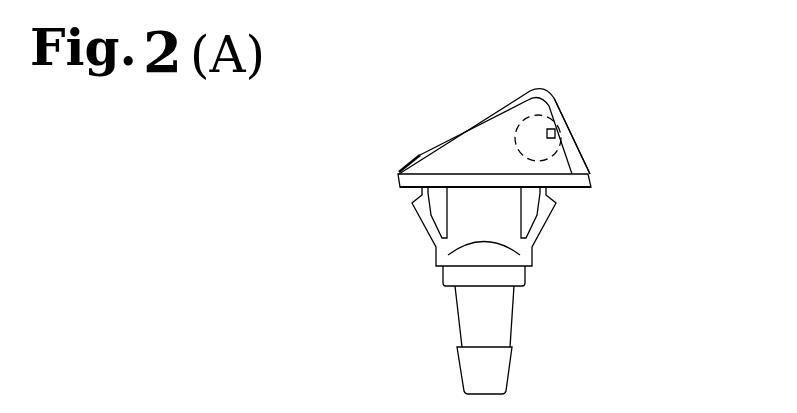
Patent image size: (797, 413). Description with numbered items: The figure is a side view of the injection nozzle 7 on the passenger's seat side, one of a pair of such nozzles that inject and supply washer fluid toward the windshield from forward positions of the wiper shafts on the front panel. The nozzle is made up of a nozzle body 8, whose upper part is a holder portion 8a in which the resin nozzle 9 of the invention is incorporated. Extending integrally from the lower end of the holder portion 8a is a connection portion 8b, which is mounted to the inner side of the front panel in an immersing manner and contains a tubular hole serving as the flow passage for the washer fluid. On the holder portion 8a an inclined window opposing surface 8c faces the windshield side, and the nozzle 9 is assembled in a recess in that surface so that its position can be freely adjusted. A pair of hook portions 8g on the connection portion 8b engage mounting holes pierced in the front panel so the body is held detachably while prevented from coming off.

The injection nozzle 7 is at (608, 92).
The nozzle body 8 is at (463, 110).
The holder portion 8a is at (496, 135).
The connection portion 8b is at (487, 315).
The window opposing surface 8c is at (577, 163).
The hook portion 8g is at (542, 228).
The resin nozzle 9 is at (562, 153).